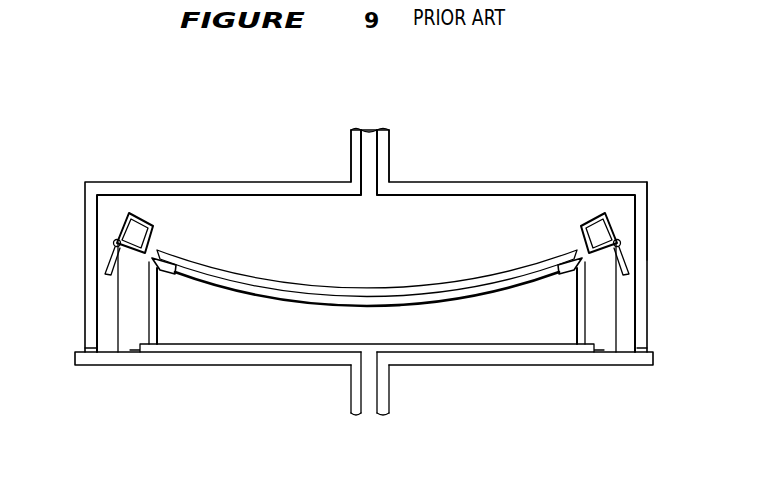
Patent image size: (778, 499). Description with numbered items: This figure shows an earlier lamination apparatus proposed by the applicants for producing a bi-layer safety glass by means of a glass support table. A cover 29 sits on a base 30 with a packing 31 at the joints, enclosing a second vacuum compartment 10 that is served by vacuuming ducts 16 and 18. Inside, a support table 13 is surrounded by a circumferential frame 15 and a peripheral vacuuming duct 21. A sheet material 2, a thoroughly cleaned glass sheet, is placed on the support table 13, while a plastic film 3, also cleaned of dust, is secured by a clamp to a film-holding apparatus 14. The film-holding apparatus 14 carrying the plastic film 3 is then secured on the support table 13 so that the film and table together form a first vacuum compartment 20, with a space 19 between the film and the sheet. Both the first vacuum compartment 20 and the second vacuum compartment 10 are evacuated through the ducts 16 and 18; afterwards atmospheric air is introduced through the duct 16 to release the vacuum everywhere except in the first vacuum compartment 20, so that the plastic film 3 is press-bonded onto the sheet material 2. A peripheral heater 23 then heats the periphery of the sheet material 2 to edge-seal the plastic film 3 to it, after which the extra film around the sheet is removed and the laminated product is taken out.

The sheet material 2 is at (511, 275).
The plastic film 3 is at (438, 282).
The second vacuum compartment 10 is at (273, 238).
The support table 13 is at (445, 327).
The film-holding apparatus 14 is at (148, 208).
The circumferential frame 15 is at (133, 338).
The vacuuming duct 16 is at (370, 172).
The vacuuming duct 18 is at (362, 400).
The gap 19 is at (338, 306).
The first vacuum compartment 20 is at (155, 247).
The peripheral vacuuming duct 21 is at (150, 310).
The peripheral heater 23 is at (172, 272).
The cover 29 is at (640, 200).
The base 30 is at (256, 356).
The packing 31 is at (90, 353).